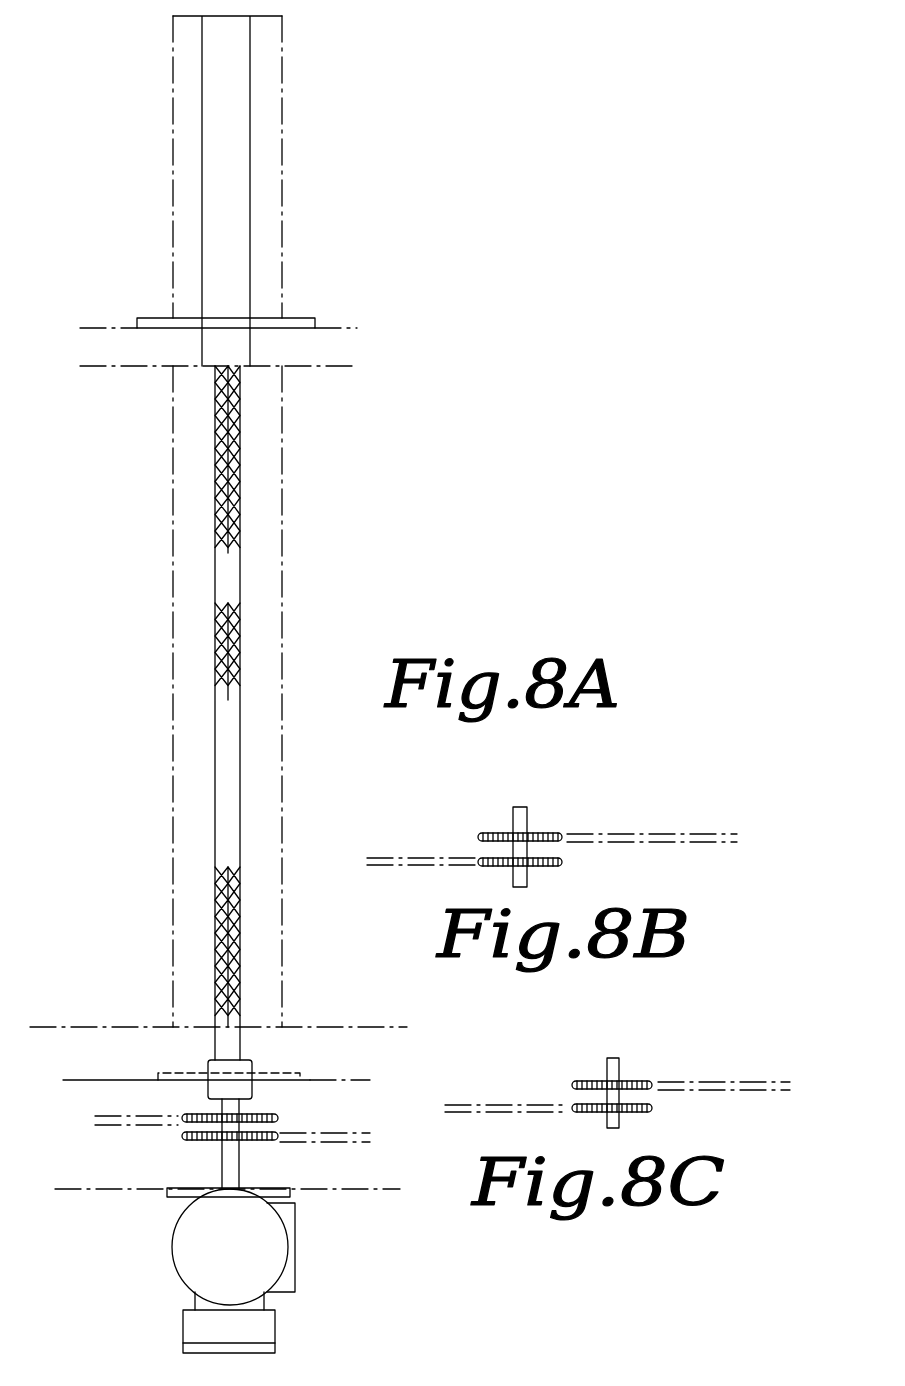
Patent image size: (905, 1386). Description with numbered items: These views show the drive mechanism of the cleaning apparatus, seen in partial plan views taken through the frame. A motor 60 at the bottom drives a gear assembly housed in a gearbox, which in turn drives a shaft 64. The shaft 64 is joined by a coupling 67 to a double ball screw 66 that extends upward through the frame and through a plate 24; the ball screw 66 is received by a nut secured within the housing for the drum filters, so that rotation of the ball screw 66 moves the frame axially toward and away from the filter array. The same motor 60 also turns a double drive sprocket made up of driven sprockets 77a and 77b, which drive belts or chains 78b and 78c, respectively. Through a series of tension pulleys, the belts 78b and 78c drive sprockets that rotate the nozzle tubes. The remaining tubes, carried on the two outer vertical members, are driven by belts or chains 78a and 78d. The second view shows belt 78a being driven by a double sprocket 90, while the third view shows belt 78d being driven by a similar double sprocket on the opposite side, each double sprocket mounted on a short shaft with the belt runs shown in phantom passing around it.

In FIG. 8A, the flange / mounting plate 24 is at (86, 314).
In FIG. 8A, the double ball screw 66 is at (216, 900).
In FIG. 8A, the coupling 67 is at (255, 1095).
In FIG. 8A, the shaft 64 is at (238, 1166).
In FIG. 8A, the motor 60 is at (172, 1265).
In FIG. 8A, the driven sprocket 77a is at (207, 1141).
In FIG. 8A, the driven sprocket 77b is at (199, 1116).
In FIG. 8B, the belt or chain 78a is at (660, 830).
In FIG. 8A, the belt or chain 78b is at (317, 1133).
In FIG. 8B, the belt or chain 78b is at (443, 822).
In FIG. 8A, the belt or chain 78c is at (133, 1108).
In FIG. 8C, the belt or chain 78c is at (742, 1081).
In FIG. 8C, the belt or chain 78d is at (527, 1055).
In FIG. 8B, the double sprocket 90 is at (493, 818).
In FIG. 8C, the double sprocket 90 is at (612, 1093).